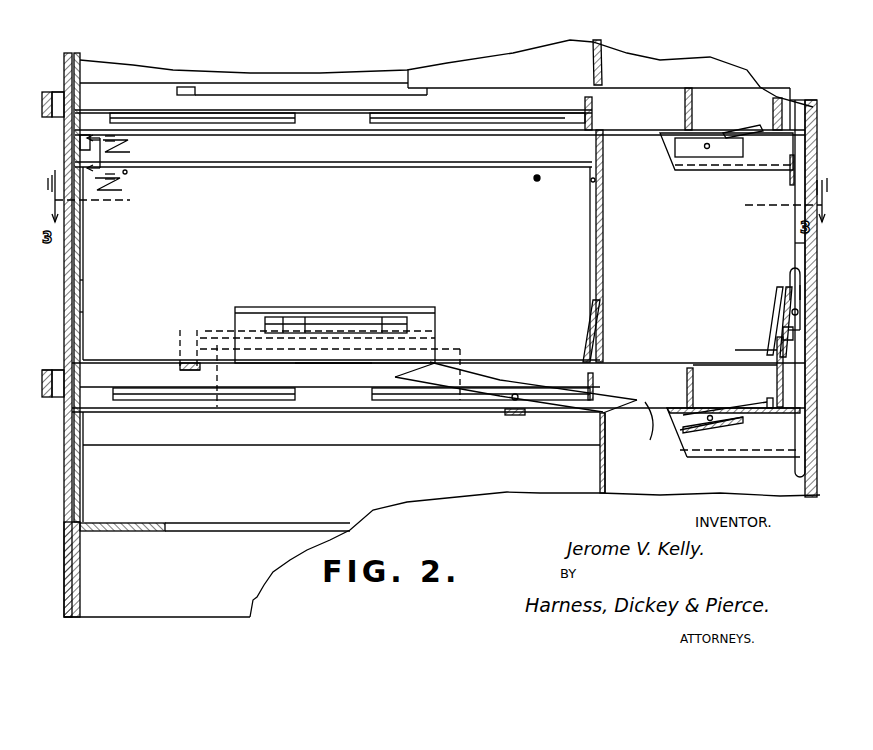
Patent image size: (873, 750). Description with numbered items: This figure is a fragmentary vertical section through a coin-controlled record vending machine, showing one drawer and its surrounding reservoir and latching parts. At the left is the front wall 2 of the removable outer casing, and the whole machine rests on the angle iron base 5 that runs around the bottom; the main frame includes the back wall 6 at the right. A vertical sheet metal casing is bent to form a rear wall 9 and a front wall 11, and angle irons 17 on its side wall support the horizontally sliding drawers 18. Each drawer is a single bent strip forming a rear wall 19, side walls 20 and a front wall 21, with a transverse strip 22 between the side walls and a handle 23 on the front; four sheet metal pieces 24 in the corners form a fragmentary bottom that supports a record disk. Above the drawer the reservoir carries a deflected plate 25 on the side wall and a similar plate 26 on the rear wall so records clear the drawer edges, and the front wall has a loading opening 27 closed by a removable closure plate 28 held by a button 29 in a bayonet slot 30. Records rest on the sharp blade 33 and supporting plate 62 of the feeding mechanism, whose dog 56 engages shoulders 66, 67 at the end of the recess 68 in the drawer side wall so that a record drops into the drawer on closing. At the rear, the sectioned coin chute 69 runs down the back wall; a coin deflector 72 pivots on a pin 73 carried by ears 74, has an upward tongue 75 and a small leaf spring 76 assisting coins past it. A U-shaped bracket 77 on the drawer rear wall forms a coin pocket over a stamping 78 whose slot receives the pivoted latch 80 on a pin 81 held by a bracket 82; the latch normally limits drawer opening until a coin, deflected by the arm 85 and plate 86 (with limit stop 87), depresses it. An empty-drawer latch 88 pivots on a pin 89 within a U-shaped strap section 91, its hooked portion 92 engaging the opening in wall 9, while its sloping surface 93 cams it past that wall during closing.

The front wall 2 is at (66, 285).
The base 5 is at (118, 530).
The back wall 6 is at (811, 98).
The rear wall 9 is at (603, 55).
The front wall 11 is at (80, 68).
The angle irons 17 is at (200, 160).
The drawers 18 is at (66, 72).
The rear wall 19 is at (777, 98).
The side walls 20 is at (640, 90).
The front wall 21 is at (55, 190).
The transverse strip 22 is at (592, 102).
The handles 23 is at (56, 118).
The sheet metal pieces 24 is at (133, 392).
The plate 25 is at (56, 370).
The plate 26 is at (606, 354).
The opening 27 is at (80, 312).
The closure plate 28 is at (85, 290).
The button 29 is at (102, 142).
The bayonet slot 30 is at (88, 135).
The blade 33 is at (343, 315).
The dog 56 is at (185, 362).
The supporting plate 62 is at (300, 330).
The shoulder 66 is at (440, 360).
The shoulder 67 is at (200, 372).
The recess 68 is at (325, 365).
The coin chutes 69 is at (797, 190).
The coin deflector 72 is at (776, 291).
The pin 73 is at (790, 312).
The ears 74 is at (801, 290).
The tongue 75 is at (792, 278).
The leaf spring 76 is at (788, 331).
The U-shaped bracket 77 is at (690, 368).
The metal stamping 78 is at (657, 420).
The pivoted latch 80 is at (765, 405).
The pin 81 is at (710, 416).
The bracket 82 is at (745, 428).
The arm 85 is at (770, 366).
The plate 86 is at (736, 351).
The limit stop 87 is at (783, 345).
The latch 88 is at (560, 405).
The pin 89 is at (518, 396).
The U-shaped section 91 is at (510, 416).
The hooked portion 92 is at (606, 440).
The sloping surface 93 is at (635, 406).